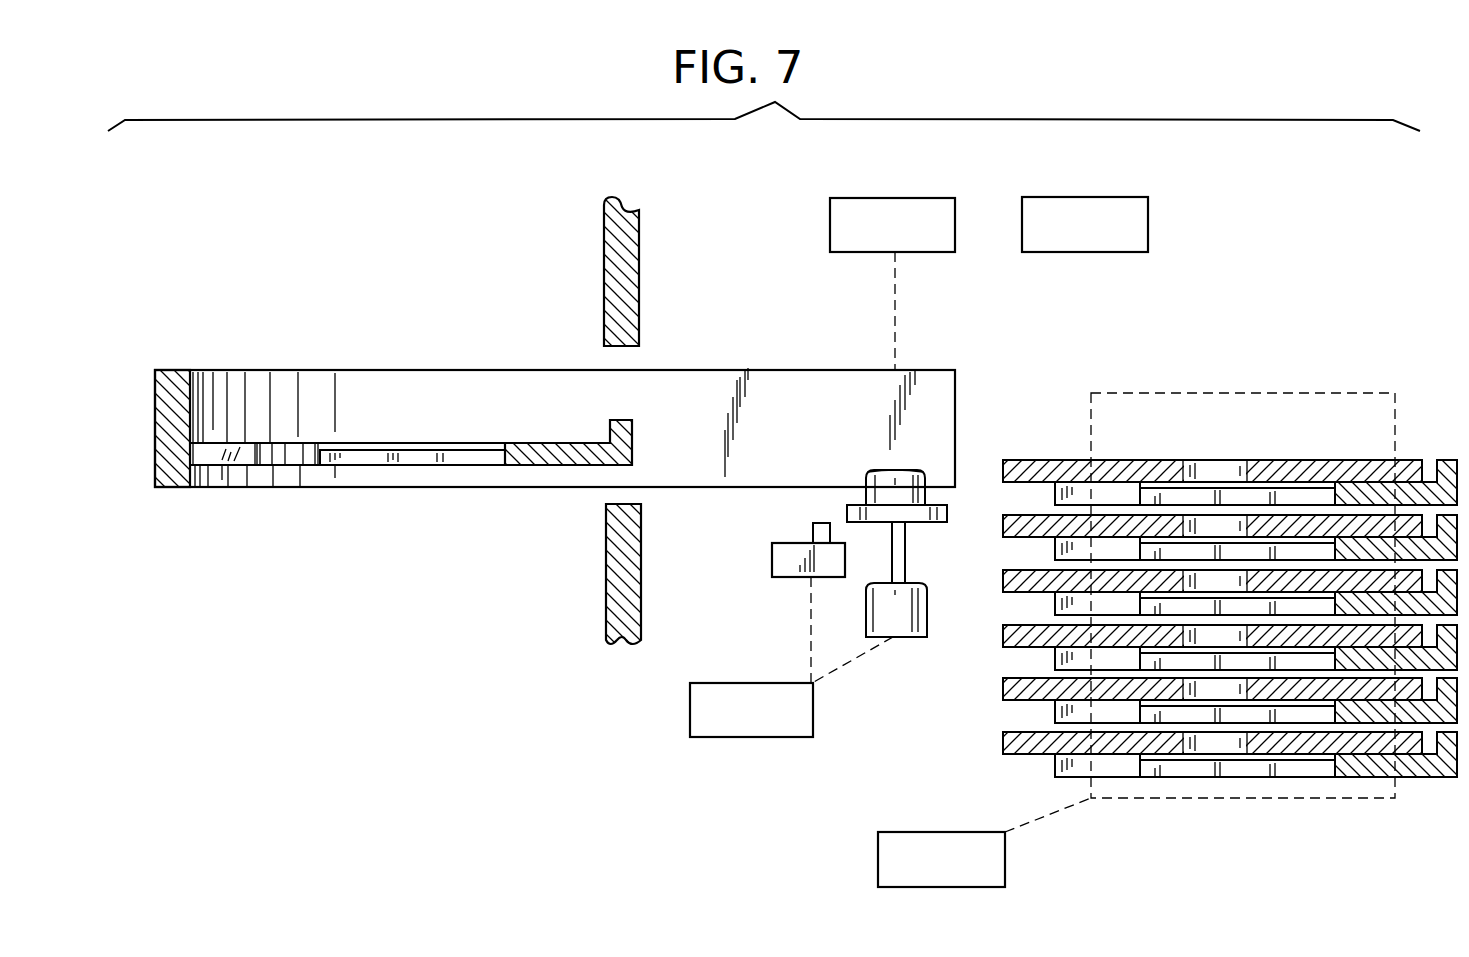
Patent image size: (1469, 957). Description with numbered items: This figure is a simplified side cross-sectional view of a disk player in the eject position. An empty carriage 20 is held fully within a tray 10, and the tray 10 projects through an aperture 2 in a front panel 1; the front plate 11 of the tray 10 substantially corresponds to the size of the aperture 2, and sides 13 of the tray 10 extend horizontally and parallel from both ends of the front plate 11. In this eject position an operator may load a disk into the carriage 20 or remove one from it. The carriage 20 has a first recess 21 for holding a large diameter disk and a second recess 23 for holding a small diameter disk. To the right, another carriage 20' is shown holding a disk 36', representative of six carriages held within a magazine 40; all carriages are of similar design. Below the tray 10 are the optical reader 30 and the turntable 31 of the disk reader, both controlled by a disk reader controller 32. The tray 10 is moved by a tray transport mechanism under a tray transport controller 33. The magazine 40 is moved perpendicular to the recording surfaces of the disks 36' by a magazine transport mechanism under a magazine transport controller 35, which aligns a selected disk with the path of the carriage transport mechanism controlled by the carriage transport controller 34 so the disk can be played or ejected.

The front panel 1 is at (604, 222).
The aperture 2 is at (602, 360).
The tray 10 is at (313, 364).
The front plate 11 is at (173, 372).
The sides 13 is at (698, 377).
The carriage 20 is at (712, 521).
The carriage 20' is at (1257, 455).
The first recess 21 is at (510, 443).
The second recess 23 is at (463, 450).
The optical reader 30 is at (772, 548).
The turntable 31 is at (920, 521).
The disk reader controller 32 is at (780, 681).
The tray transport controller 33 is at (864, 197).
The carriage transport controller 34 is at (1072, 197).
The magazine transport controller 35 is at (878, 873).
The disk 36' is at (1212, 443).
The magazine 40 is at (1231, 546).